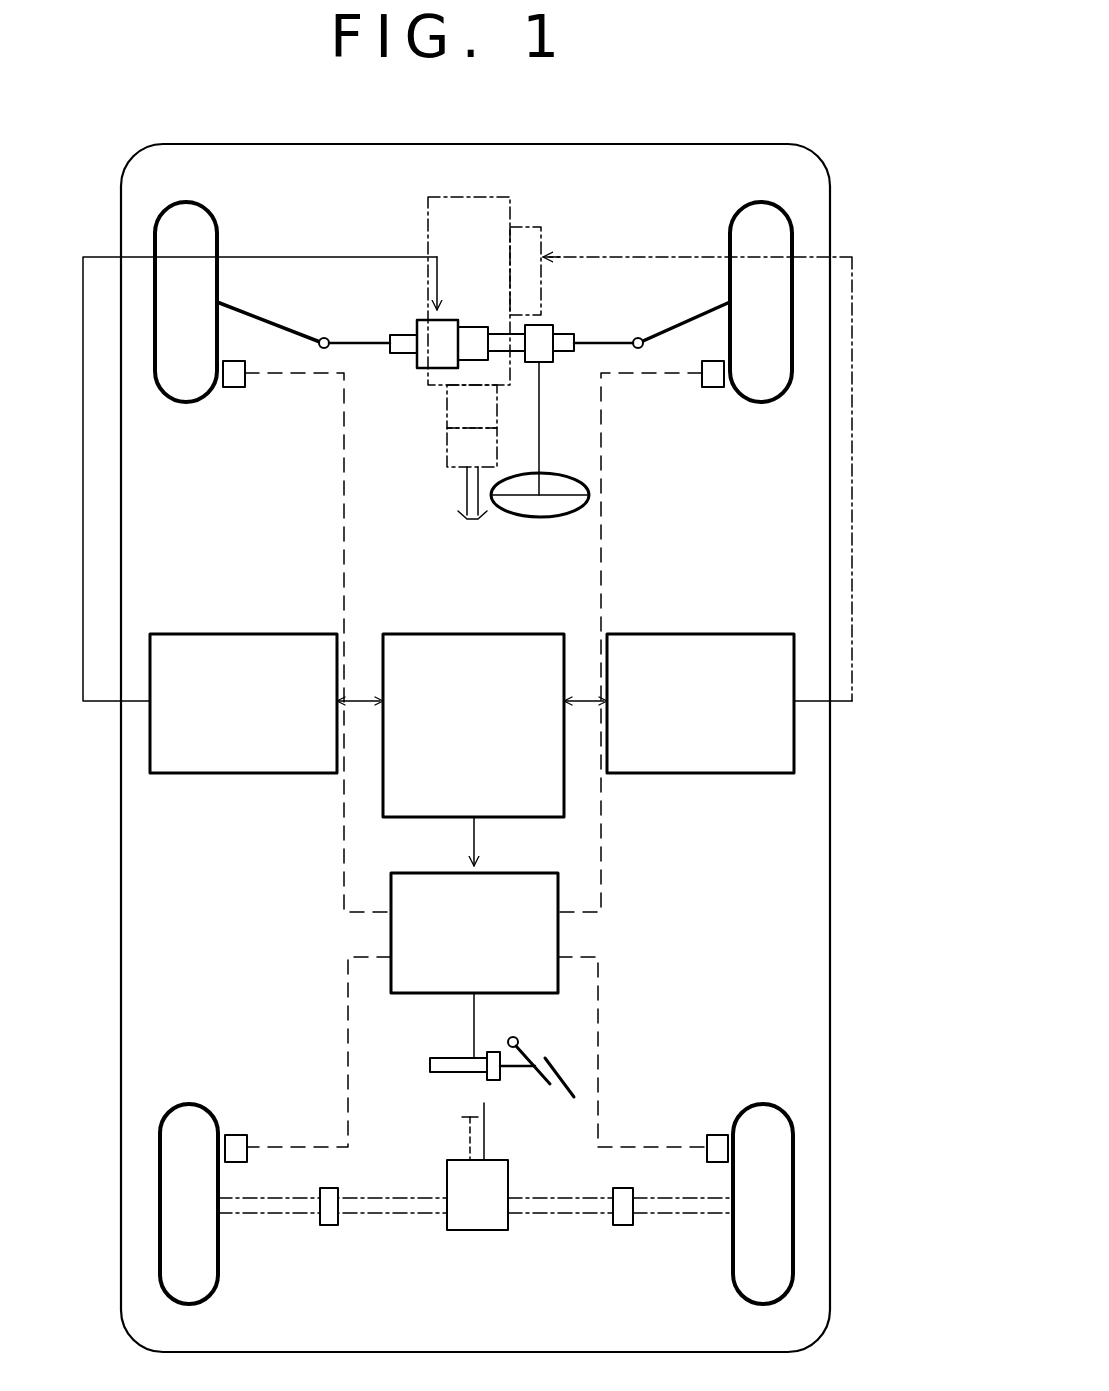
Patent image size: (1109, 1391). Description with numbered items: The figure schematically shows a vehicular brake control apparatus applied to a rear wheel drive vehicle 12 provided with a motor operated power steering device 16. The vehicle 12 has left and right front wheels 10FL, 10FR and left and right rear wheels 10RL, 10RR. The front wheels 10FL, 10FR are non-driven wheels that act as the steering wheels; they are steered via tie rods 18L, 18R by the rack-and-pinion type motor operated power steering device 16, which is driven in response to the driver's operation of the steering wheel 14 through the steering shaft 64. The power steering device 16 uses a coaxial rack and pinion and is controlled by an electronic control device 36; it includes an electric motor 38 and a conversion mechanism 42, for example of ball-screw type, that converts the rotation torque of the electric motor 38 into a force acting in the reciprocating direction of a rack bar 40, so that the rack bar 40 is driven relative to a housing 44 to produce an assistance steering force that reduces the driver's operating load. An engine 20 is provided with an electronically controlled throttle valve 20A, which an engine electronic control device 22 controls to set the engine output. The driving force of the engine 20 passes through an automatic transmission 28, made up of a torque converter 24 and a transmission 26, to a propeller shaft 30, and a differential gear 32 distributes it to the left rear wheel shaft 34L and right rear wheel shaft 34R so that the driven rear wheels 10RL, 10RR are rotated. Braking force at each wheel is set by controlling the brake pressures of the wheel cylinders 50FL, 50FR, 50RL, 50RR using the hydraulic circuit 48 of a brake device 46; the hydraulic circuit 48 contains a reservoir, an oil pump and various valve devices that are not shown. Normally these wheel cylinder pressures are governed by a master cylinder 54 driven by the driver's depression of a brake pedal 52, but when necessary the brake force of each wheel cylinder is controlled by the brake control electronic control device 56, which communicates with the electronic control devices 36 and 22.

The left front wheel 10FL is at (190, 202).
The right front wheel 10FR is at (763, 202).
The left rear wheel 10RL is at (160, 1204).
The right rear wheel 10RR is at (794, 1226).
The vehicle 12 is at (831, 1107).
The steering wheel 14 is at (590, 475).
The motor operated power steering device 16 is at (550, 320).
The left tie rod 18L is at (273, 320).
The right tie rod 18R is at (727, 303).
The engine 20 is at (469, 291).
The electronically controlled throttle valve 20A is at (523, 227).
The engine electronic control device 22 is at (700, 703).
The torque converter 24 is at (475, 409).
The transmission 26 is at (475, 448).
The automatic transmission 28 is at (441, 428).
The propeller shaft 30 is at (468, 490).
The differential gear 32 is at (473, 1232).
The left rear wheel shaft 34L is at (388, 1222).
The right rear wheel shaft 34R is at (560, 1218).
The electronic control device 36 is at (243, 703).
The electric motor 38 is at (417, 363).
The rack bar 40 is at (605, 343).
The conversion mechanism 42 is at (480, 325).
The housing 44 is at (405, 345).
The brake device 46 is at (461, 1084).
The hydraulic circuit 48 is at (474, 933).
The left front wheel cylinder 50FL is at (234, 388).
The right front wheel cylinder 50FR is at (713, 388).
The left rear wheel cylinder 50RL is at (238, 1135).
The right rear wheel cylinder 50RR is at (718, 1135).
The brake pedal 52 is at (548, 1067).
The master cylinder 54 is at (447, 1058).
The electronic control device 56 is at (473, 725).
The steering shaft 64 is at (540, 433).